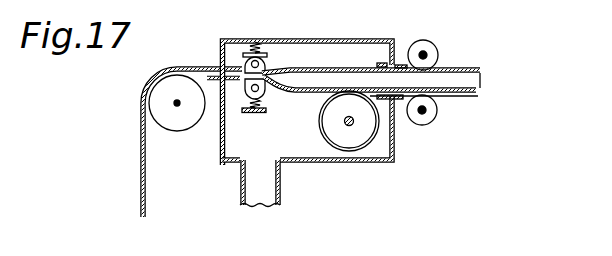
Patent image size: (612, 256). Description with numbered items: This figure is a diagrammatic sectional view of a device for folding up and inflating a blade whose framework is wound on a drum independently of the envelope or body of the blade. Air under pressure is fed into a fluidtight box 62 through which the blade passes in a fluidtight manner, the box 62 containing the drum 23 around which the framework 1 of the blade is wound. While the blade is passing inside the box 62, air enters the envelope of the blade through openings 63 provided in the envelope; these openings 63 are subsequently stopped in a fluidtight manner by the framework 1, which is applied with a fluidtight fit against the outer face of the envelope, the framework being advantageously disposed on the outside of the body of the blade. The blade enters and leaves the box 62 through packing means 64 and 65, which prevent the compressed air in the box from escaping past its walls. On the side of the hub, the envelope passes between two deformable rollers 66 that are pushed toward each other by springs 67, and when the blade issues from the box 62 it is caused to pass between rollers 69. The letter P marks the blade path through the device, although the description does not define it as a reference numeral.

The framework 1 is at (472, 98).
The drum 23 is at (377, 143).
The fluidtight box 62 is at (358, 41).
The openings 63 is at (308, 96).
The packing means 64 is at (212, 68).
The packing means 65 is at (398, 63).
The deformable rollers 66 is at (270, 57).
The springs 67 is at (252, 113).
The rollers 69 is at (440, 53).
The paper P is at (482, 78).